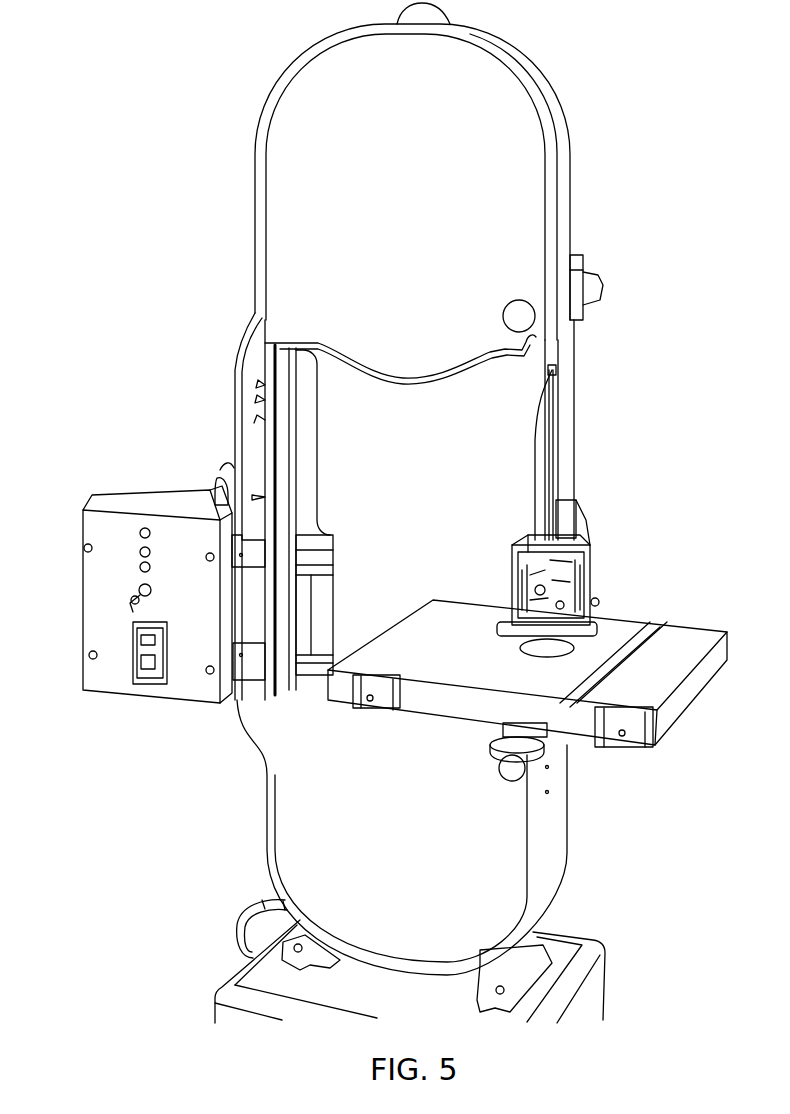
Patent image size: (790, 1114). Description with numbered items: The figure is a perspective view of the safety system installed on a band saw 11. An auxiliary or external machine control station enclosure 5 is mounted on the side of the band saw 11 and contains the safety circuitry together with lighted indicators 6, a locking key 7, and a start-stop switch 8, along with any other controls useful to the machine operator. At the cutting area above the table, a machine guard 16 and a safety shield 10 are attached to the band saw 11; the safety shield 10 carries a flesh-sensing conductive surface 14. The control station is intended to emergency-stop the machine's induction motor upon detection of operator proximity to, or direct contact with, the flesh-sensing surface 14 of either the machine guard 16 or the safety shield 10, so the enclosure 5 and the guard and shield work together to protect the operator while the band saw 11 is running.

The machine control station enclosure 5 is at (96, 592).
The lighted indicators 6 is at (143, 530).
The locking key 7 is at (138, 590).
The start-stop switch 8 is at (140, 685).
The safety shield 10 is at (508, 623).
The band saw 11 is at (306, 101).
The flesh-sensing conductive surface 14 is at (597, 625).
The machine guard 16 is at (585, 568).